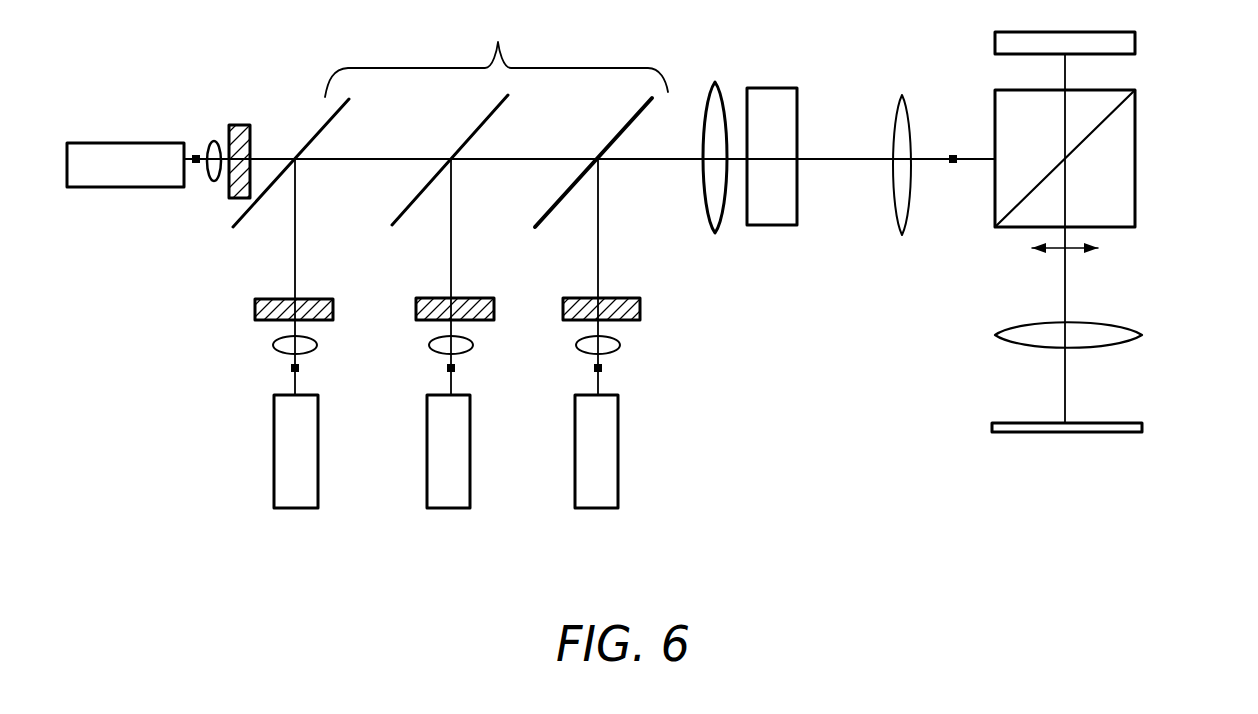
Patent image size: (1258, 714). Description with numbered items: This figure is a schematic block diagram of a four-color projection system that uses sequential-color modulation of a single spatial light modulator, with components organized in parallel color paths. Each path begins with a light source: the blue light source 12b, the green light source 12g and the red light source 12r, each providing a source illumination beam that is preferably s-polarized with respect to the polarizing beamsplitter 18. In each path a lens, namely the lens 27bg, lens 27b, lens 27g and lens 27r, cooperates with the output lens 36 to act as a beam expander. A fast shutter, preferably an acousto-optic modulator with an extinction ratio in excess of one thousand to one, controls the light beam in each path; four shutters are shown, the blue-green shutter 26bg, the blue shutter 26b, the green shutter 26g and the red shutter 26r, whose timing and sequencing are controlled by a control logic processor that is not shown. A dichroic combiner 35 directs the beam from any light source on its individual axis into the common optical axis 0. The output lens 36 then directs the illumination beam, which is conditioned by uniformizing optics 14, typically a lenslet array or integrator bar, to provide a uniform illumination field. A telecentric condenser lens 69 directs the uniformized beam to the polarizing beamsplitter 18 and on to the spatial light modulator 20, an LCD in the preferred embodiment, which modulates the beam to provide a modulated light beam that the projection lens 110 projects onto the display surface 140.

The common optical axis 0 is at (667, 160).
The light source, blue light path 12b is at (121, 143).
The light source, green light path 12g is at (427, 472).
The light source, red light path 12r is at (575, 473).
The lens, blue-green light path 27bg is at (203, 188).
The lens, blue light path 27b is at (317, 345).
The lens, green light path 27g is at (473, 345).
The lens, red light path 27r is at (620, 345).
The shutter, blue-green light path 26bg is at (240, 125).
The shutter, blue light path 26b is at (315, 299).
The shutter, green light path 26g is at (477, 298).
The shutter, red light path 26r is at (620, 298).
The dichroic combiner 35 is at (450, 117).
The output lens 36 is at (713, 82).
The uniformizing optics 14 is at (775, 88).
The telecentric condenser lens 69 is at (905, 100).
The polarizing beamsplitter 18 is at (1135, 160).
The spatial light modulator 20 is at (1135, 38).
The projection lens 110 is at (1138, 333).
The display surface 140 is at (1130, 433).